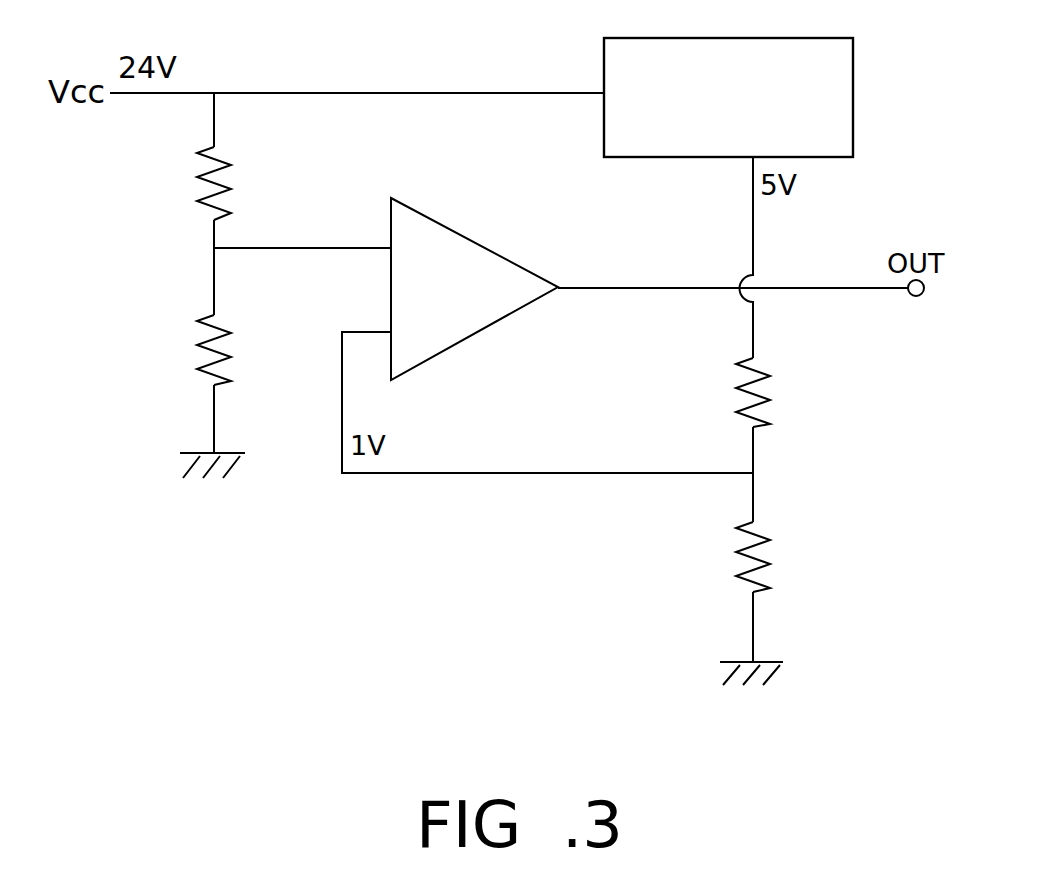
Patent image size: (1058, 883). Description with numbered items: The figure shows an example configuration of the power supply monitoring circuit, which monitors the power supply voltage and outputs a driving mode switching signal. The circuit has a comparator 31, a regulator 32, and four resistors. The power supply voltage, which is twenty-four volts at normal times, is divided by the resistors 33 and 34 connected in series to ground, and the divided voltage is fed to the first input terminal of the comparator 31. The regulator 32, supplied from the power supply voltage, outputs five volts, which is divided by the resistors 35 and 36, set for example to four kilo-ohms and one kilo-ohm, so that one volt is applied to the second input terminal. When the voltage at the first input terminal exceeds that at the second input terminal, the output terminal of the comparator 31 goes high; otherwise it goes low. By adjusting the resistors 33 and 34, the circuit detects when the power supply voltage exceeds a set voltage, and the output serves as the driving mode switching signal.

The comparator 31 is at (495, 247).
The regulator 32 is at (853, 97).
The resistor 33 is at (198, 186).
The resistor 34 is at (198, 351).
The resistor 35 is at (763, 392).
The resistor 36 is at (763, 555).